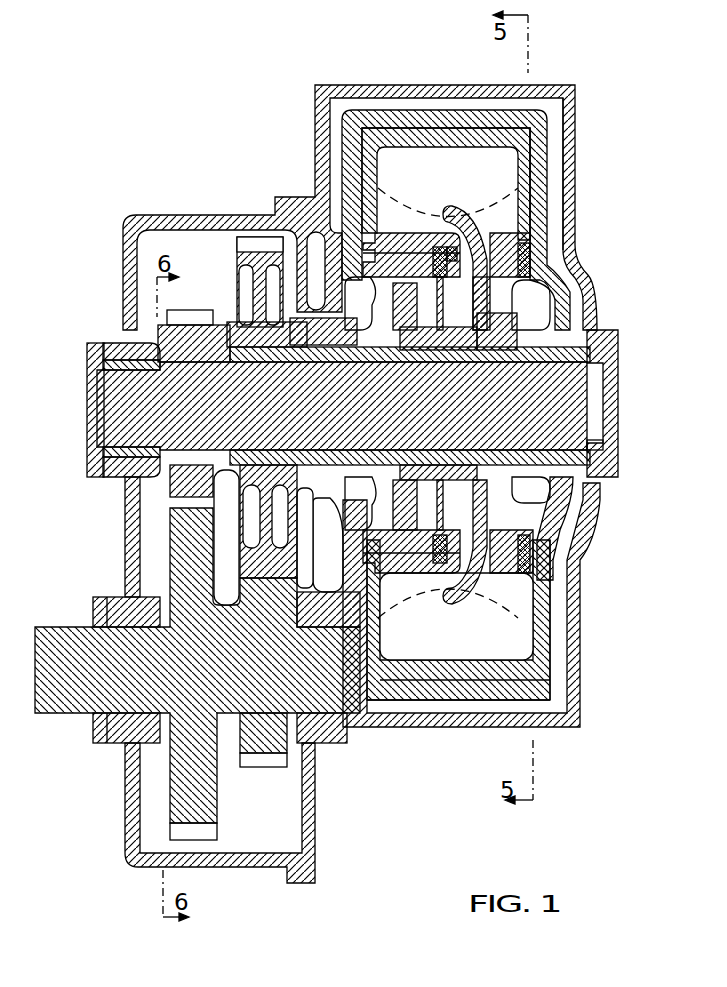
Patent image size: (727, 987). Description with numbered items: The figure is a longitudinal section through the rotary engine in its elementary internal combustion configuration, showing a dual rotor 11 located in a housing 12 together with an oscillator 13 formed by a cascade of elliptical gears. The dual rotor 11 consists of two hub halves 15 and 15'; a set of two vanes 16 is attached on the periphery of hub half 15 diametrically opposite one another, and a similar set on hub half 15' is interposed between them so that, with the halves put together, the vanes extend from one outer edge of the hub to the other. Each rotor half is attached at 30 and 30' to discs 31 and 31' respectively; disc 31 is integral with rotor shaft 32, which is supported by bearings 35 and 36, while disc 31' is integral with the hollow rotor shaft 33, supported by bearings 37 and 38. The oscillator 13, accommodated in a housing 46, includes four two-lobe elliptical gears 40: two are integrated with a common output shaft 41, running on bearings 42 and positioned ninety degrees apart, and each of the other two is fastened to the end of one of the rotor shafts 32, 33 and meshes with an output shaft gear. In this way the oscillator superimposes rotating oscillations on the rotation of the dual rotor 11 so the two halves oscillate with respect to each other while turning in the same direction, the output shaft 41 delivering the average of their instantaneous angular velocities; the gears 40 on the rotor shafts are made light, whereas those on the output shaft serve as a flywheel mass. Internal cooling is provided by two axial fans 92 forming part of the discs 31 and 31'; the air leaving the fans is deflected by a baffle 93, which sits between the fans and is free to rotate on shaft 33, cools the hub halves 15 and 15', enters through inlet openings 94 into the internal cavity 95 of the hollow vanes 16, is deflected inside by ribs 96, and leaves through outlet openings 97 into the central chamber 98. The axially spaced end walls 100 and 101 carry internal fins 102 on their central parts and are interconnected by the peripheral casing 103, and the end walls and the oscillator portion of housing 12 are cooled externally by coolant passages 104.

The dual rotor 11 is at (536, 628).
The housing 12 is at (582, 668).
The oscillator 13 is at (253, 235).
The hub half 15 is at (508, 240).
The hub half 15' is at (411, 240).
The vanes 16 is at (522, 163).
The attachment 30 is at (463, 277).
The attachment 30' is at (435, 288).
The disc 31 is at (501, 301).
The disc 31' is at (433, 505).
The rotor shaft 32 is at (608, 381).
The rotor shaft 33 is at (307, 456).
The bearing 35 is at (602, 450).
The bearing 36 is at (100, 458).
The bearing 37 is at (445, 352).
The bearing 38 is at (306, 363).
The two-lobe elliptical gears 40 is at (240, 259).
The output shaft 41 is at (70, 715).
The bearings 42 is at (117, 725).
The housing 46 is at (128, 813).
The axial fans 92 is at (400, 345).
The baffle 93 is at (453, 464).
The inlet openings 94 is at (460, 545).
The internal cavity 95 is at (417, 153).
The ribs 96 is at (453, 207).
The outlet openings 97 is at (505, 505).
The central chamber 98 is at (365, 290).
The end wall 100 is at (548, 198).
The end wall 101 is at (347, 143).
The fins 102 is at (548, 313).
The peripheral casing 103 is at (457, 695).
The coolant passages 104 is at (335, 103).